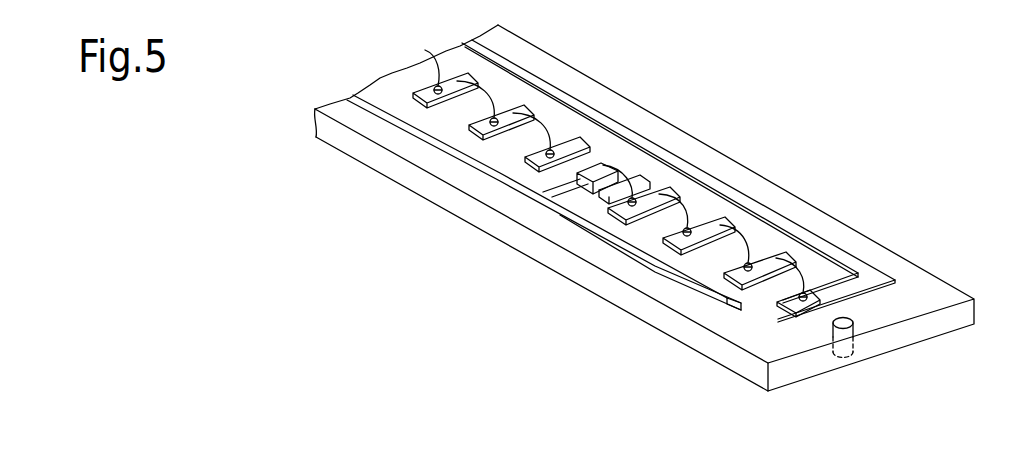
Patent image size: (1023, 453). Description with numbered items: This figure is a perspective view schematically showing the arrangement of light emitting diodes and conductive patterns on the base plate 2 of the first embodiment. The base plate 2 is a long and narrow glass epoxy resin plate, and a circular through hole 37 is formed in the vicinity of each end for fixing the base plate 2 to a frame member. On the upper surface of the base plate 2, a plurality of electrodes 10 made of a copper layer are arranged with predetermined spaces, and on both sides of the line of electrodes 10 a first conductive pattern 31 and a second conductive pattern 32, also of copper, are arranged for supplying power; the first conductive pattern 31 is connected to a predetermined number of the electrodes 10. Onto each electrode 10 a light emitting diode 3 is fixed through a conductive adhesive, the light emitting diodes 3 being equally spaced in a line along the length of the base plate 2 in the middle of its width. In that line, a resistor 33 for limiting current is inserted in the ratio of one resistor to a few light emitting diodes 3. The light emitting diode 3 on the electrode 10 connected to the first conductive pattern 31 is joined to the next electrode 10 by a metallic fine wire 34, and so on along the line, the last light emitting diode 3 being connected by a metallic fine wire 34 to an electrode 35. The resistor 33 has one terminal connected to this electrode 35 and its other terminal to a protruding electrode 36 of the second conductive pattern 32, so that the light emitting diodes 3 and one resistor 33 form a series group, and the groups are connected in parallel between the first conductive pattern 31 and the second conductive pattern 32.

The base plate 2 is at (920, 283).
The light emitting diode 3 is at (803, 301).
The electrode 10 is at (728, 256).
The first conductive pattern 31 is at (787, 223).
The second conductive pattern 32 is at (633, 248).
The resistor 33 is at (605, 164).
The metallic fine wire 34 is at (690, 210).
The electrode 35 is at (638, 180).
The protruding electrode 36 is at (568, 197).
The circular through hole 37 is at (851, 319).